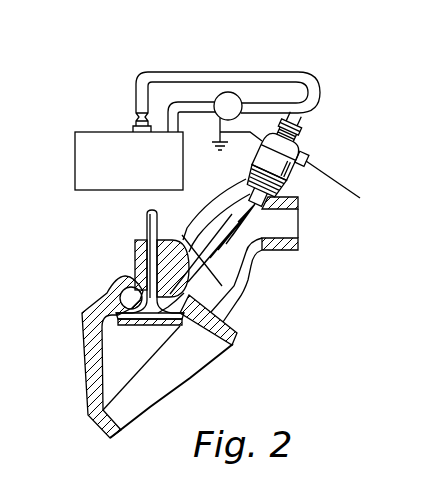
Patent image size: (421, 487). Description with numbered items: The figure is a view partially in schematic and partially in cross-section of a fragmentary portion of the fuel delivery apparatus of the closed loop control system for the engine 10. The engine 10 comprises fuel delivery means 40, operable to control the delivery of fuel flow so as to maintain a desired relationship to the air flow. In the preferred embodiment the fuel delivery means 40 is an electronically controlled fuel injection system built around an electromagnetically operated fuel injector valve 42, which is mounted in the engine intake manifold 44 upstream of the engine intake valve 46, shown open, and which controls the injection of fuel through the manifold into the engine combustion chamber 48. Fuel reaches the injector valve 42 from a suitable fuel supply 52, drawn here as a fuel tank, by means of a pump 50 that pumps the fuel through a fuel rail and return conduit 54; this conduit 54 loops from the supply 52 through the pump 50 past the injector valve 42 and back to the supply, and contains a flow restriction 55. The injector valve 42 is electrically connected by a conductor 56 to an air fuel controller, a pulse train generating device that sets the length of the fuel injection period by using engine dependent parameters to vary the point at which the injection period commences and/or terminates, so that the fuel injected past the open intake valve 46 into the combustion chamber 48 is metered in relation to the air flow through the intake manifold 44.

The engine 10 is at (74, 297).
The fuel delivery means 40 is at (316, 130).
The fuel injector valve 42 is at (291, 174).
The engine intake manifold 44 is at (252, 270).
The engine intake valve 46 is at (150, 221).
The engine combustion chamber 48 is at (101, 363).
The pump 50 is at (217, 122).
The fuel supply 52 is at (88, 131).
The fuel rail and return conduit 54 is at (271, 81).
The flow restriction 55 is at (137, 109).
The conductor 56 is at (334, 183).